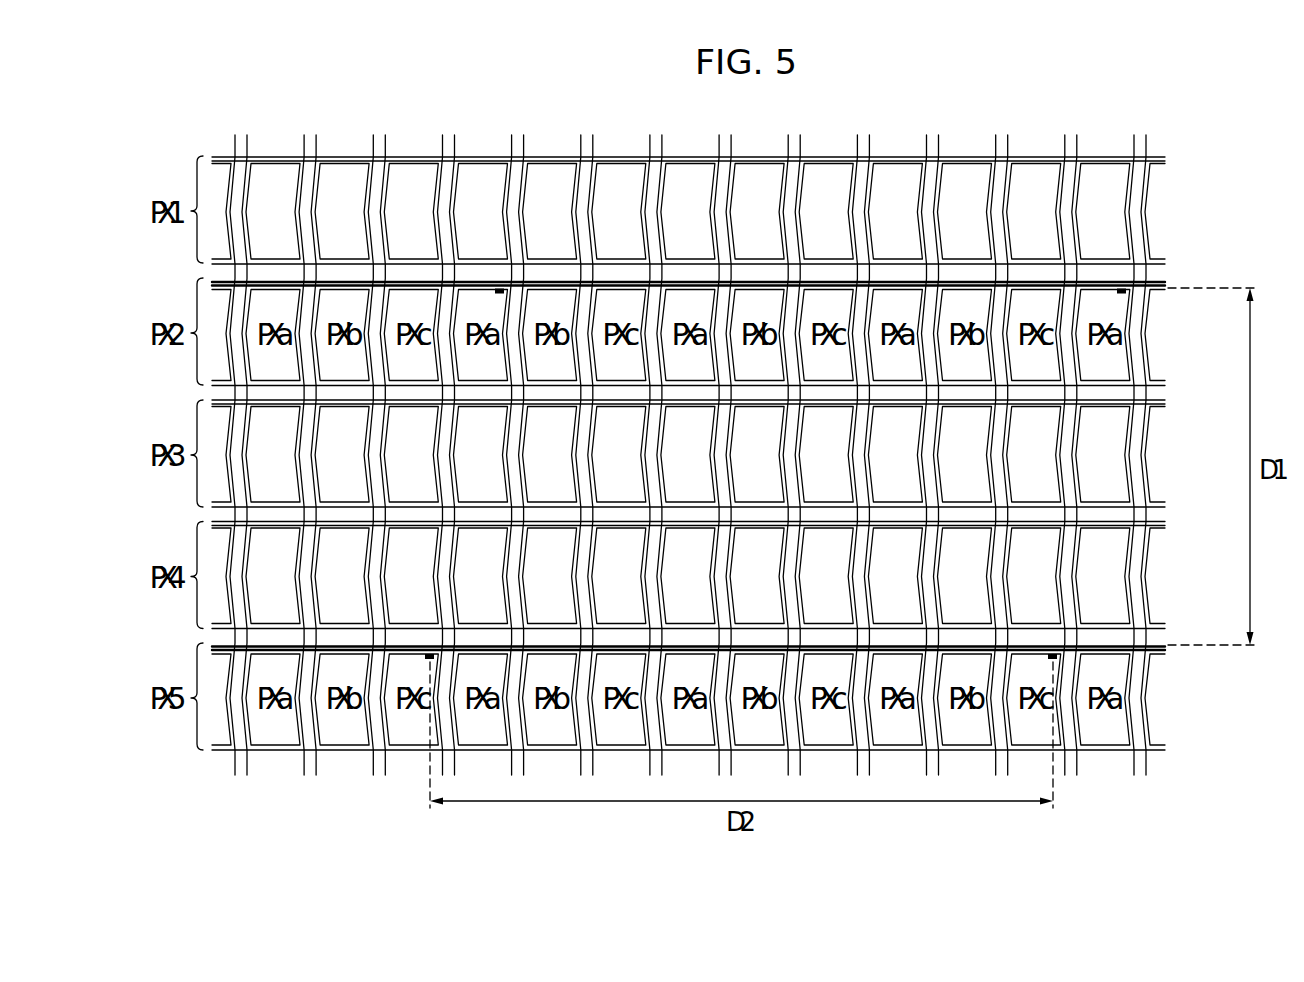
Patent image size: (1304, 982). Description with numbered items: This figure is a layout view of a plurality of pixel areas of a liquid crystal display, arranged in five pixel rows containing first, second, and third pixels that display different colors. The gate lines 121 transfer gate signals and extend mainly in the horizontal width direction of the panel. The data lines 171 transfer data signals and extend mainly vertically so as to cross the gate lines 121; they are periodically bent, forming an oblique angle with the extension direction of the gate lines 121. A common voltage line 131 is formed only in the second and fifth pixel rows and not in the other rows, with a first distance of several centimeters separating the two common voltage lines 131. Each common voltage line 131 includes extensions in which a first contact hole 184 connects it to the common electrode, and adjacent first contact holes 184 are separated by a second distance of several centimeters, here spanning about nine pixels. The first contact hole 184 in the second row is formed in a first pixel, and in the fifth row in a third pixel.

The data line 171 is at (378, 135).
The gate line 121 is at (1165, 386).
The common voltage line 131 is at (1165, 283).
The first contact hole 184 is at (1122, 293).